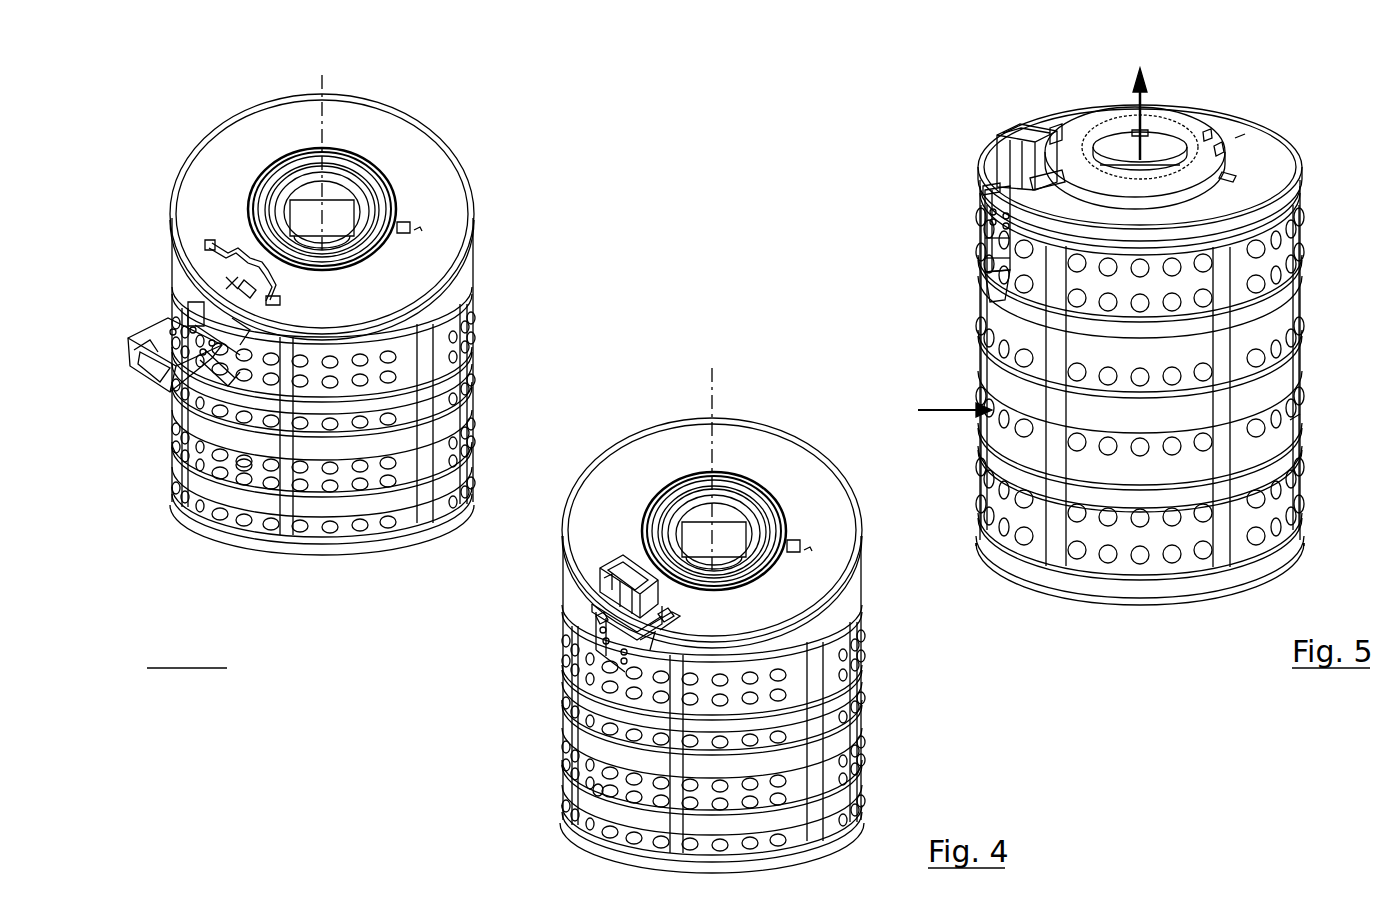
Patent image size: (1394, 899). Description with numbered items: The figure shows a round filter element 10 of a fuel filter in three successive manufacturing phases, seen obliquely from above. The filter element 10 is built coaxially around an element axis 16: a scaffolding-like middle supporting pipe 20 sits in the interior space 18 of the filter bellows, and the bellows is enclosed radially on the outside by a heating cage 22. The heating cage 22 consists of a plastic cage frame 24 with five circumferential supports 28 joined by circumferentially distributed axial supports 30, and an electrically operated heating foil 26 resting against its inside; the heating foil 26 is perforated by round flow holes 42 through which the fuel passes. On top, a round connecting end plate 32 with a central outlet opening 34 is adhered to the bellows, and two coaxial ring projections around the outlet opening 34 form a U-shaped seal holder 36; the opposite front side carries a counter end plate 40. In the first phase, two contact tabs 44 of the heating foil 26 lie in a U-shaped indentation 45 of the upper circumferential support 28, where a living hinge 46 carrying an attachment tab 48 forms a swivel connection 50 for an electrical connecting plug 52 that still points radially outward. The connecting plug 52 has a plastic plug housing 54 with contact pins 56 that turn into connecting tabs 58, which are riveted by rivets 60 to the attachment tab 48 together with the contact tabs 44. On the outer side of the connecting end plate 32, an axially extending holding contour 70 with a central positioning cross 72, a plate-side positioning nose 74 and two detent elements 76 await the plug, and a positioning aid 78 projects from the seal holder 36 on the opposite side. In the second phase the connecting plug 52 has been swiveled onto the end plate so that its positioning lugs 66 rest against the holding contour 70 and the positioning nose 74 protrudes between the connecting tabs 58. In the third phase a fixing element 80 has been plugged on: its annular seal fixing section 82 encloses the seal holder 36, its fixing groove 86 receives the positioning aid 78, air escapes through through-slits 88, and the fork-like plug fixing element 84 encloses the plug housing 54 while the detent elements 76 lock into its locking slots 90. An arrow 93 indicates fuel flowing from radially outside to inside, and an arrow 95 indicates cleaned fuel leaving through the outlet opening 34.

In FIG. 3, the filter element 10 is at (160, 112).
In FIG. 4, the filter element 10 is at (640, 405).
In FIG. 5, the filter element 10 is at (1290, 112).
In FIG. 3, the element axis 16 is at (334, 78).
In FIG. 4, the element axis 16 is at (712, 369).
In FIG. 5, the element axis 16 is at (1152, 76).
In FIG. 3, the interior space 18 is at (312, 208).
In FIG. 4, the interior space 18 is at (700, 505).
In FIG. 5, the interior space 18 is at (1118, 118).
In FIG. 3, the middle supporting pipe 20 is at (352, 190).
In FIG. 4, the middle supporting pipe 20 is at (745, 515).
In FIG. 3, the heating cage 22 is at (474, 403).
In FIG. 4, the heating cage 22 is at (864, 707).
In FIG. 5, the heating cage 22 is at (1298, 412).
In FIG. 3, the cage frame 24 is at (386, 542).
In FIG. 4, the cage frame 24 is at (821, 834).
In FIG. 5, the cage frame 24 is at (1145, 596).
In FIG. 3, the heating foil 26 is at (345, 515).
In FIG. 4, the heating foil 26 is at (622, 818).
In FIG. 5, the heating foil 26 is at (1115, 540).
In FIG. 3, the circumferential supports 28 is at (468, 258).
In FIG. 4, the circumferential supports 28 is at (848, 600).
In FIG. 5, the circumferential supports 28 is at (1290, 210).
In FIG. 3, the axial supports 30 is at (280, 520).
In FIG. 4, the axial supports 30 is at (672, 838).
In FIG. 5, the axial supports 30 is at (1058, 560).
In FIG. 3, the connecting end plate 32 is at (435, 190).
In FIG. 4, the connecting end plate 32 is at (822, 493).
In FIG. 5, the connecting end plate 32 is at (1270, 140).
In FIG. 3, the outlet opening 34 is at (332, 188).
In FIG. 4, the outlet opening 34 is at (725, 500).
In FIG. 5, the outlet opening 34 is at (1150, 162).
In FIG. 3, the seal holder 36 is at (265, 170).
In FIG. 4, the seal holder 36 is at (660, 490).
In FIG. 5, the seal holder 36 is at (1140, 147).
In FIG. 5, the counter end plate 40 is at (1135, 600).
In FIG. 3, the flow holes 42 is at (245, 470).
In FIG. 4, the flow holes 42 is at (598, 795).
In FIG. 5, the flow holes 42 is at (1292, 418).
In FIG. 3, the contact tabs 44 is at (190, 310).
In FIG. 3, the indentation 45 is at (240, 322).
In FIG. 4, the indentation 45 is at (650, 640).
In FIG. 5, the indentation 45 is at (995, 320).
In FIG. 4, the living hinge 46 is at (628, 660).
In FIG. 5, the living hinge 46 is at (990, 262).
In FIG. 4, the attachment tab 48 is at (598, 632).
In FIG. 5, the attachment tab 48 is at (985, 227).
In FIG. 3, the swivel connection 50 is at (190, 325).
In FIG. 4, the swivel connection 50 is at (605, 645).
In FIG. 5, the swivel connection 50 is at (982, 242).
In FIG. 3, the connecting plug 52 is at (150, 402).
In FIG. 4, the connecting plug 52 is at (606, 550).
In FIG. 5, the connecting plug 52 is at (1008, 153).
In FIG. 3, the plug housing 54 is at (150, 345).
In FIG. 4, the plug housing 54 is at (630, 550).
In FIG. 5, the plug housing 54 is at (1015, 130).
In FIG. 3, the contact pins 56 is at (144, 382).
In FIG. 4, the contact pins 56 is at (615, 580).
In FIG. 5, the contact pins 56 is at (1030, 128).
In FIG. 4, the connecting tabs 58 is at (612, 600).
In FIG. 5, the connecting tabs 58 is at (990, 190).
In FIG. 3, the rivets 60 is at (205, 345).
In FIG. 5, the rivets 60 is at (980, 215).
In FIG. 3, the positioning lugs 66 is at (180, 410).
In FIG. 4, the positioning lugs 66 is at (622, 670).
In FIG. 3, the holding contour 70 is at (245, 240).
In FIG. 4, the holding contour 70 is at (668, 590).
In FIG. 3, the positioning cross 72 is at (230, 283).
In FIG. 3, the plate-side positioning nose 74 is at (258, 300).
In FIG. 4, the plate-side positioning nose 74 is at (598, 620).
In FIG. 5, the plate-side positioning nose 74 is at (980, 190).
In FIG. 3, the detent elements 76 is at (215, 245).
In FIG. 4, the detent elements 76 is at (660, 615).
In FIG. 3, the positioning aid 78 is at (410, 228).
In FIG. 4, the positioning aid 78 is at (800, 547).
In FIG. 5, the positioning aid 78 is at (1225, 178).
In FIG. 5, the fixing element 80 is at (1233, 133).
In FIG. 5, the seal fixing section 82 is at (1218, 146).
In FIG. 5, the plug fixing element 84 is at (1073, 168).
In FIG. 5, the fixing groove 86 is at (1215, 160).
In FIG. 5, the through-slits 88 is at (1208, 135).
In FIG. 5, the locking slot 90 is at (1055, 126).
In FIG. 5, the arrow 93 is at (930, 400).
In FIG. 5, the arrow 95 is at (1140, 135).